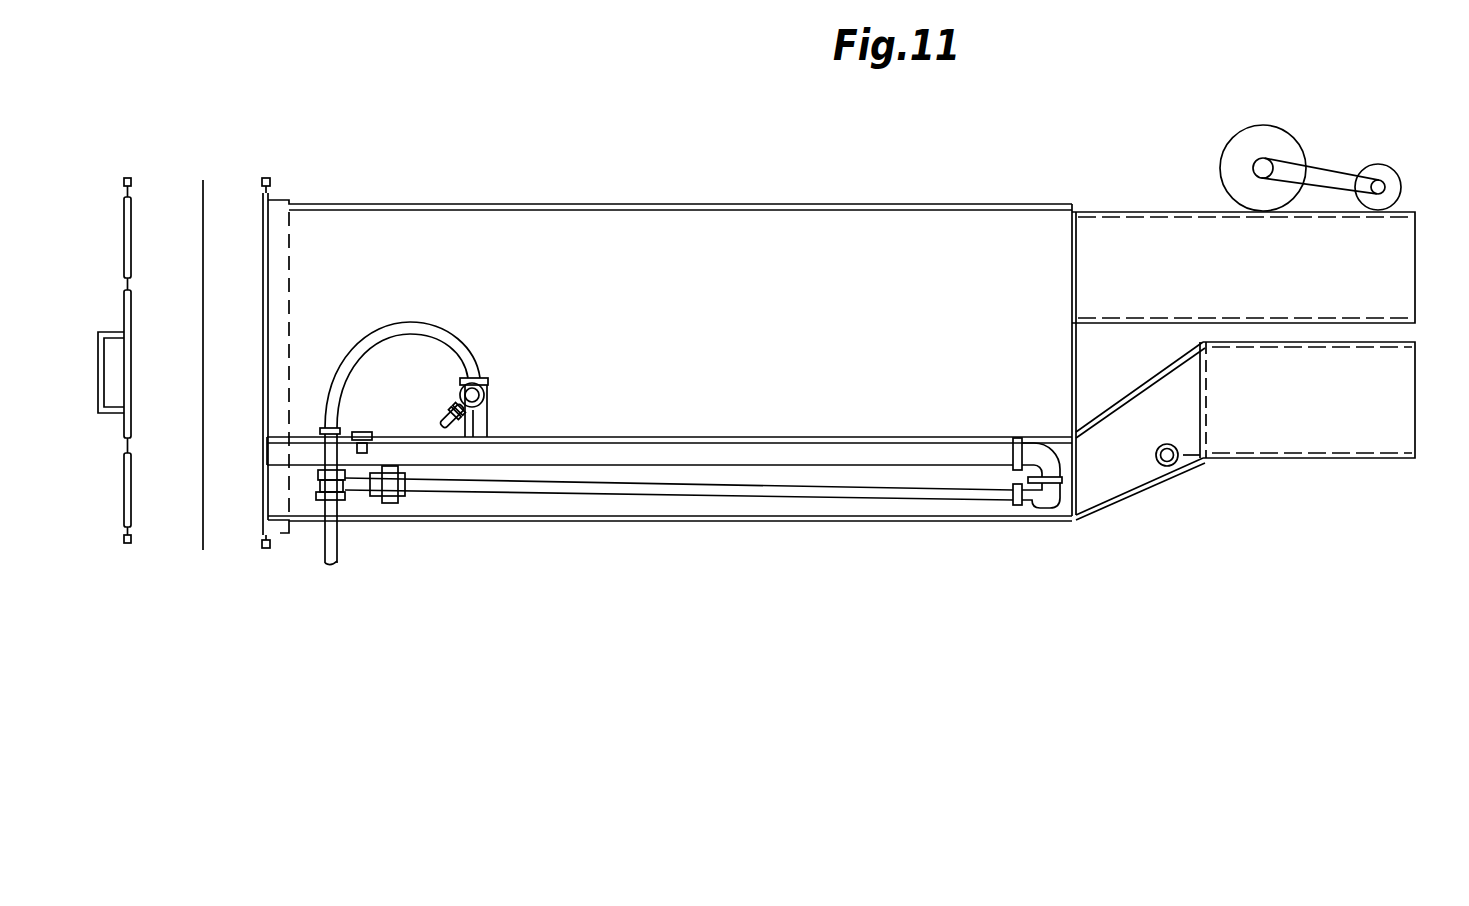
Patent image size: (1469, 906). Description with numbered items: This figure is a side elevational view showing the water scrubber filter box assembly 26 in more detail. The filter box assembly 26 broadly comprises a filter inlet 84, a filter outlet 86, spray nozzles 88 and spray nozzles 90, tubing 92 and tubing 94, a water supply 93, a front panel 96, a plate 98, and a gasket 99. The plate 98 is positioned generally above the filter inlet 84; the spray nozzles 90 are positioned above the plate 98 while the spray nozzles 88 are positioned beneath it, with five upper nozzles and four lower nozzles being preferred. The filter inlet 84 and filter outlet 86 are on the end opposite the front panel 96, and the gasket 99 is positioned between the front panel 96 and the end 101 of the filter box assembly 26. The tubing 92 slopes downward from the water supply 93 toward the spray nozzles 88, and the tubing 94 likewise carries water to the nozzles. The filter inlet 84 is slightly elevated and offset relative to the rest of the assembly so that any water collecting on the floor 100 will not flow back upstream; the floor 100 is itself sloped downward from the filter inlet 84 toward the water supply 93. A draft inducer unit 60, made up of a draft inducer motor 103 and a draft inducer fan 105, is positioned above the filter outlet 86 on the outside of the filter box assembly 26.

The water scrubber filter box assembly 26 is at (597, 152).
The draft inducer unit 60 is at (1363, 130).
The filter inlet 84 is at (1113, 470).
The filter outlet 86 is at (1123, 238).
The spray nozzles 88 is at (1063, 512).
The spray nozzles 90 is at (490, 395).
The tubing 92 is at (810, 494).
The water supply 93 is at (330, 477).
The tubing 94 is at (365, 352).
The front panel 96 is at (124, 213).
The plate 98 is at (852, 437).
The gasket 99 is at (203, 203).
The floor 100 is at (541, 516).
The end 101 is at (265, 233).
The draft inducer motor 103 is at (1381, 172).
The draft inducer fan 105 is at (1283, 147).